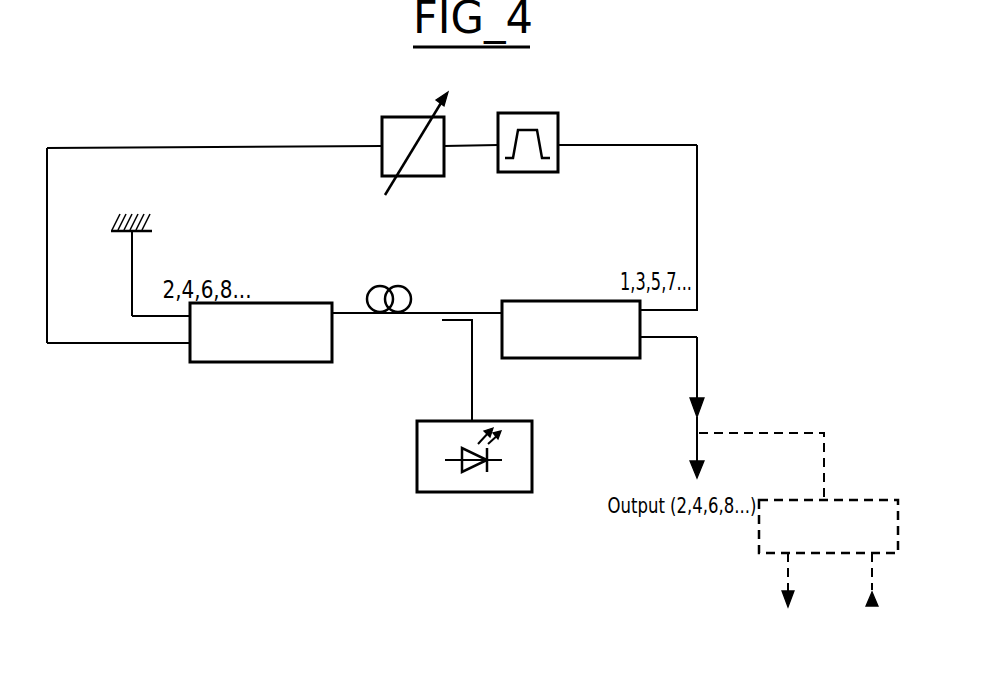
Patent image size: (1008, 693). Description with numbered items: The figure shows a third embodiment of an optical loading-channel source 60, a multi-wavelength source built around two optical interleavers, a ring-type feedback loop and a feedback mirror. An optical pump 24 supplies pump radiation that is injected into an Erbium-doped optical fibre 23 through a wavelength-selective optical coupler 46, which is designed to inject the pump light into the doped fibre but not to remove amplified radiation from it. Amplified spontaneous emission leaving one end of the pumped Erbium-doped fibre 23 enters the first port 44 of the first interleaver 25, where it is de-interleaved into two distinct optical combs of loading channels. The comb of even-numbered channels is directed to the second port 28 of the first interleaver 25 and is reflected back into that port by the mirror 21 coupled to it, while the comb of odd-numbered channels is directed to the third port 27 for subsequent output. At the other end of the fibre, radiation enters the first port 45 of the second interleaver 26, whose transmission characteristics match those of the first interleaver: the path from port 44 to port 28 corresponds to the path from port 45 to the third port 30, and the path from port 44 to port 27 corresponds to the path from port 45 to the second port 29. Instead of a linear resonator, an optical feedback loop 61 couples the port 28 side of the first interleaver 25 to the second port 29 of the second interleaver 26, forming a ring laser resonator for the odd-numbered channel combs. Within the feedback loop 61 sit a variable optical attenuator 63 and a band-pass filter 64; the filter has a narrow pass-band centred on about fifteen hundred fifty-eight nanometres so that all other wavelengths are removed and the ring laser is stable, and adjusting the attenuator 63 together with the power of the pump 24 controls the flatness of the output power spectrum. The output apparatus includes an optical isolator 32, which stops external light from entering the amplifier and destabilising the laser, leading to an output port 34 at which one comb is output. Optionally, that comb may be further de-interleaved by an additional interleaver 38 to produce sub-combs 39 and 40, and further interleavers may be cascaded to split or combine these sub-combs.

The optical loading-channel source 60 is at (626, 96).
The optical feedback loop 61 is at (218, 147).
The variable optical attenuator 63 is at (403, 117).
The band-pass filter 64 is at (532, 113).
The mirror 21 is at (174, 220).
The second port of the first interleaver 28 is at (130, 316).
The third port of the first interleaver 27 is at (172, 345).
The first interleaver 25 is at (263, 364).
The first port of the first interleaver 44 is at (343, 316).
The Erbium-doped optical fibre 23 is at (430, 285).
The first port of the second interleaver 45 is at (492, 312).
The wavelength-selective optical coupler 46 is at (452, 322).
The optical pump 24 is at (545, 461).
The second interleaver 26 is at (587, 360).
The second port of the second interleaver 29 is at (702, 310).
The third port of the second interleaver 30 is at (662, 339).
The optical isolator 32 is at (700, 393).
The output port 34 is at (703, 470).
The interleaver 38 is at (868, 500).
The sub-comb 39 is at (783, 604).
The sub-comb 40 is at (876, 600).